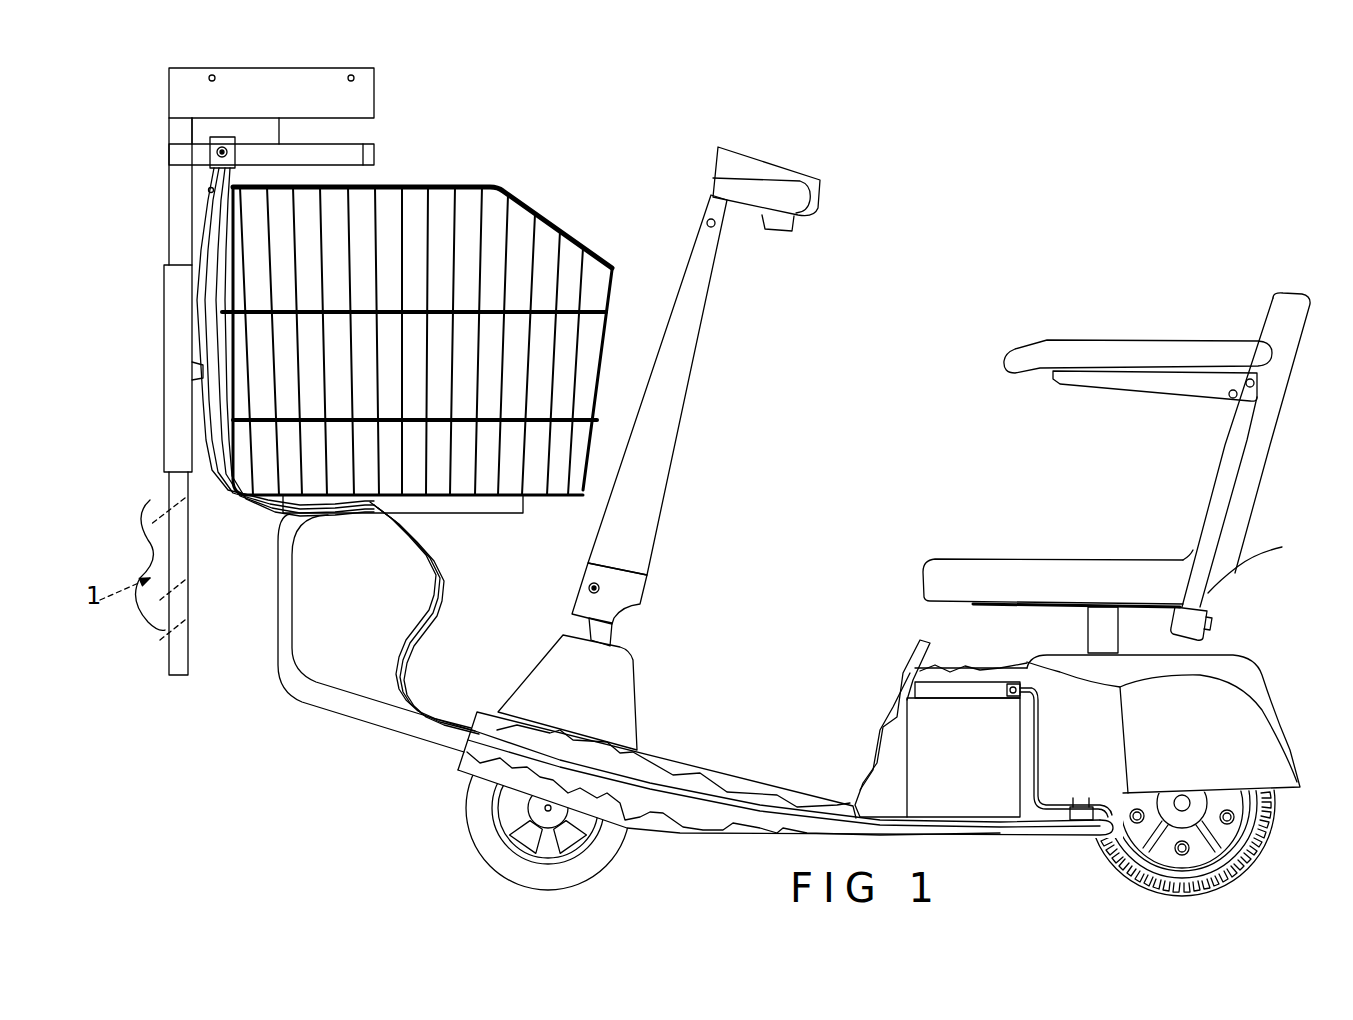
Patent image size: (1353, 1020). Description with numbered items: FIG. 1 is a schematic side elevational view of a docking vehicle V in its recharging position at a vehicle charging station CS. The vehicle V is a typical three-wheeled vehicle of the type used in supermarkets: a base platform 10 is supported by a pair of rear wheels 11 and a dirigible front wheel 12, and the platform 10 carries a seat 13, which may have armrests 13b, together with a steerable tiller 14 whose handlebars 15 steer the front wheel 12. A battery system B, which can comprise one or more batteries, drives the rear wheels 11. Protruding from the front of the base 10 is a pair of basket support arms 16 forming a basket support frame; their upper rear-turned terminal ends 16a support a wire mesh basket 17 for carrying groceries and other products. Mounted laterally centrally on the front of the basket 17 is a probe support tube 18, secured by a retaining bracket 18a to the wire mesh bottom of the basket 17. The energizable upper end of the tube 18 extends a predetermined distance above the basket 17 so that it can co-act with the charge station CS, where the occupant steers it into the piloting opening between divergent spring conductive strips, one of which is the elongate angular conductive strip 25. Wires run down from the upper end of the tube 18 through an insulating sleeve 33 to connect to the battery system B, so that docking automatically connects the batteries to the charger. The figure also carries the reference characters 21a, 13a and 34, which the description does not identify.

The mounting plate 21a is at (376, 90).
The charge station CS is at (383, 128).
The elongate angular conductive strip 25 is at (338, 156).
The wire basket 17 is at (474, 182).
The retaining bracket 18a is at (178, 133).
The probe support tube 18 is at (212, 486).
The upper rear-turned terminal ends 16a is at (494, 504).
The basket support arms 16 is at (294, 702).
The insulating sleeve 33 is at (437, 629).
The base platform 10 is at (678, 768).
The dirigible front wheel 12 is at (490, 836).
The steerable tiller 14 is at (694, 327).
The handlebars 15 is at (780, 188).
The three-wheeled vehicle V is at (826, 582).
The armrests 13b is at (1128, 348).
The seat 13 is at (1282, 547).
The seat 13a is at (1095, 628).
The cover flap 34 is at (912, 637).
The battery system B is at (987, 797).
The rear wheels 11 is at (1265, 842).